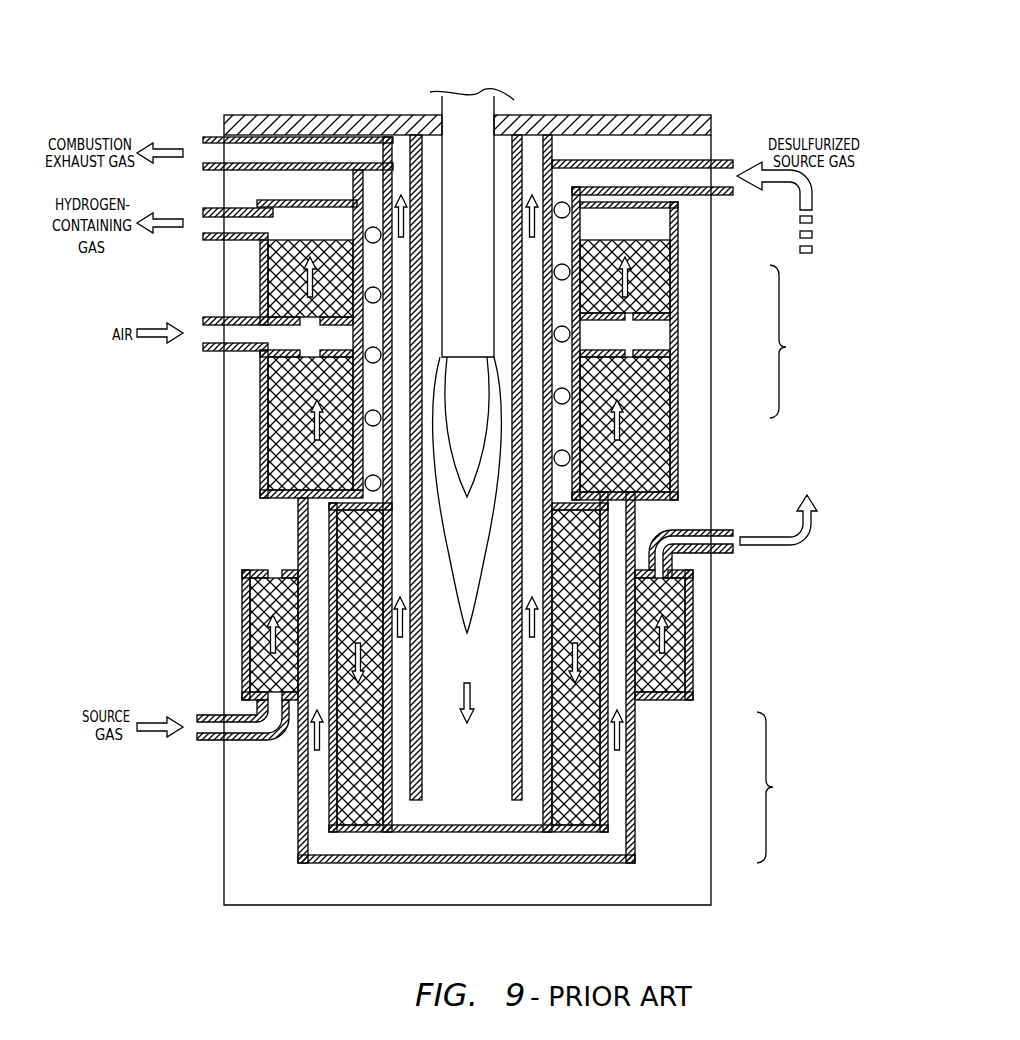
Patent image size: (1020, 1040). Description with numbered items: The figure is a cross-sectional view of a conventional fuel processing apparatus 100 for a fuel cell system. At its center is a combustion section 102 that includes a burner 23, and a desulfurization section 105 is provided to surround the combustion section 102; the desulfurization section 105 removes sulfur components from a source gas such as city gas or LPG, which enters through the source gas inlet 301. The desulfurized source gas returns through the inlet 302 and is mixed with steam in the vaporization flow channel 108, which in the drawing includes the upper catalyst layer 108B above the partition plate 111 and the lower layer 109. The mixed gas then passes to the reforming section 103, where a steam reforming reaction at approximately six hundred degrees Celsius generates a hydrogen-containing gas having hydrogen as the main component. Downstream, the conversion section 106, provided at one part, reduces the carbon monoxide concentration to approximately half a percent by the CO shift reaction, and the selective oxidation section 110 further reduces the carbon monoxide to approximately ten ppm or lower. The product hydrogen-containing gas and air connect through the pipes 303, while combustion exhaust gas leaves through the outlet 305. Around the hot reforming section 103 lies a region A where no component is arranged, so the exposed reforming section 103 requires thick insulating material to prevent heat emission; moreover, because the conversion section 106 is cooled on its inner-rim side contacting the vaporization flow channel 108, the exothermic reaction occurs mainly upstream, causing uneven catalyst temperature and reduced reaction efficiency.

The fuel processing apparatus 100 is at (516, 63).
The burner 23 is at (441, 108).
The combustion exhaust gas outlet 305 is at (224, 120).
The desulfurized source gas inlet 302 is at (733, 160).
The hydrogen-containing gas outlet / air inlet 303 is at (203, 236).
The selective oxidation section 110 is at (677, 255).
The CO removing catalyst layer 108B is at (673, 290).
The vaporization flow channel 108 is at (793, 341).
The partition plate 111 is at (677, 358).
The CO shift catalyst layer 109 is at (670, 397).
The conversion section 106 is at (678, 457).
The desulfurization section 105 is at (687, 625).
The source gas inlet pipe 301 is at (203, 714).
The reforming section 103 is at (607, 807).
The combustion section 102 is at (467, 815).
The region A is at (782, 787).